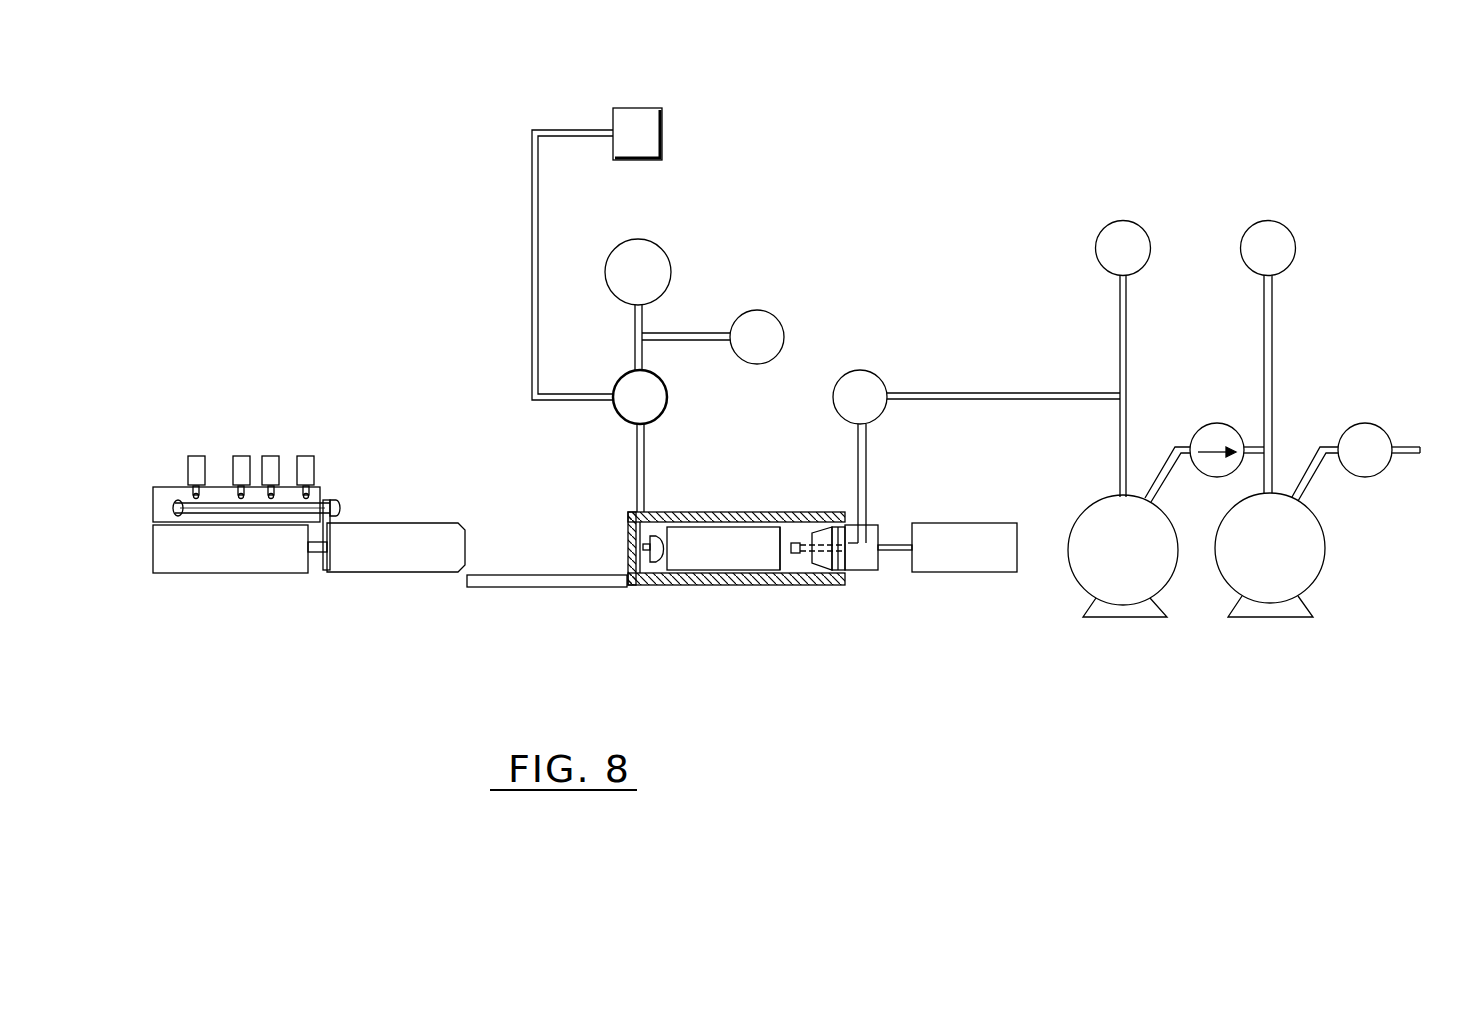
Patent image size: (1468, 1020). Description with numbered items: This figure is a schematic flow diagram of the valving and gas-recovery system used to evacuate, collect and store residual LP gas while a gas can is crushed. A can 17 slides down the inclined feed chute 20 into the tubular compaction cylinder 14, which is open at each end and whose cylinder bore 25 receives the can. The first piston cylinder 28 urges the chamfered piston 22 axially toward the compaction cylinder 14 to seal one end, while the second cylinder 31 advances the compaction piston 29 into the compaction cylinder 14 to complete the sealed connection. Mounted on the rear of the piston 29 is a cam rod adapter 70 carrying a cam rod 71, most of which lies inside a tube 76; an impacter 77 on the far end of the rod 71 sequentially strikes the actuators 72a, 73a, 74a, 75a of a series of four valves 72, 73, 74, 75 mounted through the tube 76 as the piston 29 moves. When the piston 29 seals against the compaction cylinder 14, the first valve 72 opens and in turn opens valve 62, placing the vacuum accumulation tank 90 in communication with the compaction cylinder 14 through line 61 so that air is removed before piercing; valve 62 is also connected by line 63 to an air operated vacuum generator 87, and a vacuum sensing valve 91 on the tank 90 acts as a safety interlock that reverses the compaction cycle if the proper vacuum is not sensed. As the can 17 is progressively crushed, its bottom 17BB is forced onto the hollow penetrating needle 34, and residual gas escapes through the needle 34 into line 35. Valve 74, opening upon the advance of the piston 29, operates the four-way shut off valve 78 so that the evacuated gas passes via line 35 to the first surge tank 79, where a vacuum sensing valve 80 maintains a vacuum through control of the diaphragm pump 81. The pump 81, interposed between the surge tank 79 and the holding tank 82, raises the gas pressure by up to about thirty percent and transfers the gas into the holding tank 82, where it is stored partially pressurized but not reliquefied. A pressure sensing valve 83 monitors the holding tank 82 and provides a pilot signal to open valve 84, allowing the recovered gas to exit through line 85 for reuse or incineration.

The compaction cylinder 14 is at (717, 587).
The can 17 is at (739, 563).
The can bottom 17BB is at (792, 527).
The inclined feed chute 20 is at (530, 582).
The piston 22 is at (865, 568).
The cylinder bore 25 is at (641, 572).
The first piston cylinder 28 is at (986, 563).
The compaction piston 29 is at (412, 563).
The second cylinder 31 is at (262, 563).
The hollow penetrating needle 34 is at (797, 556).
The line 35 is at (990, 398).
The line 61 is at (637, 467).
The valve 62 is at (666, 393).
The line 63 is at (532, 207).
The cam rod adapter 70 is at (325, 573).
The cam rod 71 is at (200, 510).
The first valve 72 is at (194, 462).
The valve actuator 72a is at (193, 495).
The second valve 73 is at (244, 462).
The valve actuator 73a is at (236, 494).
The third valve 74 is at (269, 460).
The valve actuator 74a is at (280, 495).
The fourth valve 75 is at (313, 468).
The valve actuator 75a is at (313, 497).
The tube 76 is at (153, 503).
The impacter 77 is at (175, 507).
The four-way shut off valve 78 is at (870, 378).
The first surge tank 79 is at (1146, 559).
The vacuum sensing valve 80 is at (1137, 226).
The diaphragm pump 81 is at (1218, 423).
The holding tank 82 is at (1293, 567).
The pressure sensing valve 83 is at (1282, 228).
The pilot valve 84 is at (1363, 423).
The line 85 is at (1405, 445).
The air operated vacuum generator 87 is at (662, 113).
The vacuum accumulation tank 90 is at (665, 258).
The vacuum sensing valve 91 is at (763, 312).